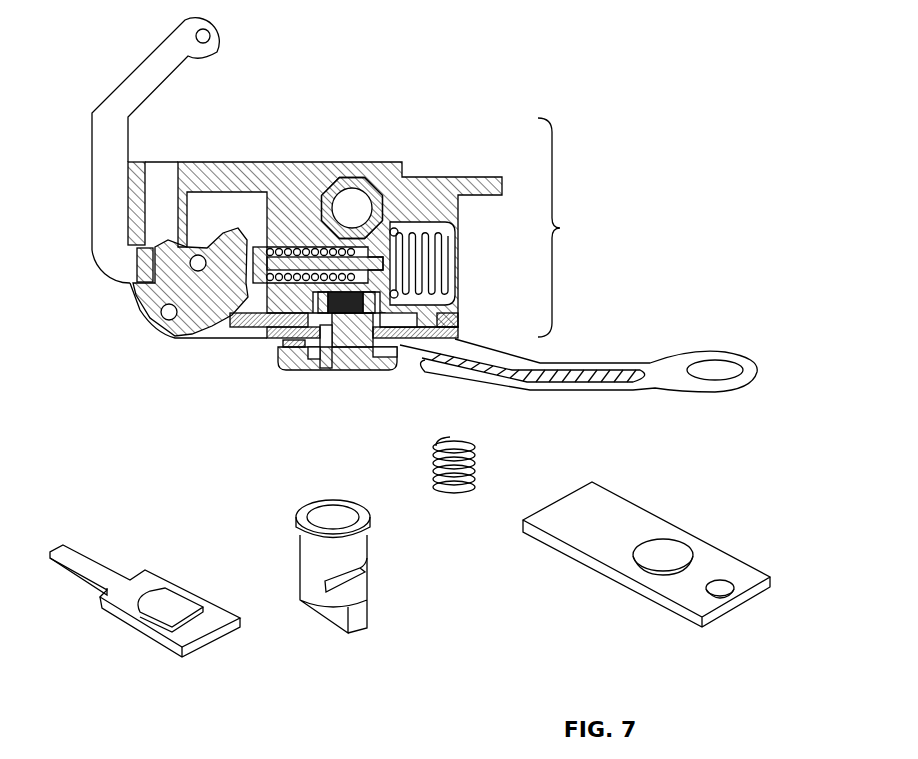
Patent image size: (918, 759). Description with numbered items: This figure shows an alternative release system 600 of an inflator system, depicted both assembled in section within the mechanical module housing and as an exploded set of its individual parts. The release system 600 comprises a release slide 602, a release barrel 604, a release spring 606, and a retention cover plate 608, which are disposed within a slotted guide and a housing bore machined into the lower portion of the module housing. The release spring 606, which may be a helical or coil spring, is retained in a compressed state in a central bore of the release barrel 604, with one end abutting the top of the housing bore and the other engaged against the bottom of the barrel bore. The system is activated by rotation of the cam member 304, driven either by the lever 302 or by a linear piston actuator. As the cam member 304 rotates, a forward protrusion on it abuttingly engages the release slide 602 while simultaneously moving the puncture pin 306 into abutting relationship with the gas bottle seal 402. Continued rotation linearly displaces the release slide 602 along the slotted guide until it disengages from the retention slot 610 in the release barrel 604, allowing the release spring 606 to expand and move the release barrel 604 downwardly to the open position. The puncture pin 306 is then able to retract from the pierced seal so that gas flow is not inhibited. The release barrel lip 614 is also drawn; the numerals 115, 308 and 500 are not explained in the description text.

The housing 115 is at (465, 238).
The lever 302 is at (120, 72).
The cam member 304 is at (158, 298).
The puncture pin 306 is at (262, 247).
The pin spring 308 is at (308, 250).
The roller 500 is at (373, 197).
The gas bottle seal 402 is at (397, 291).
The release system 600 is at (574, 227).
The release slide 602 is at (244, 325).
The release barrel 604 is at (340, 347).
The release spring 606 is at (356, 310).
The retention cover plate 608 is at (450, 338).
The retention slot 610 is at (372, 577).
The release barrel lip 614 is at (300, 518).